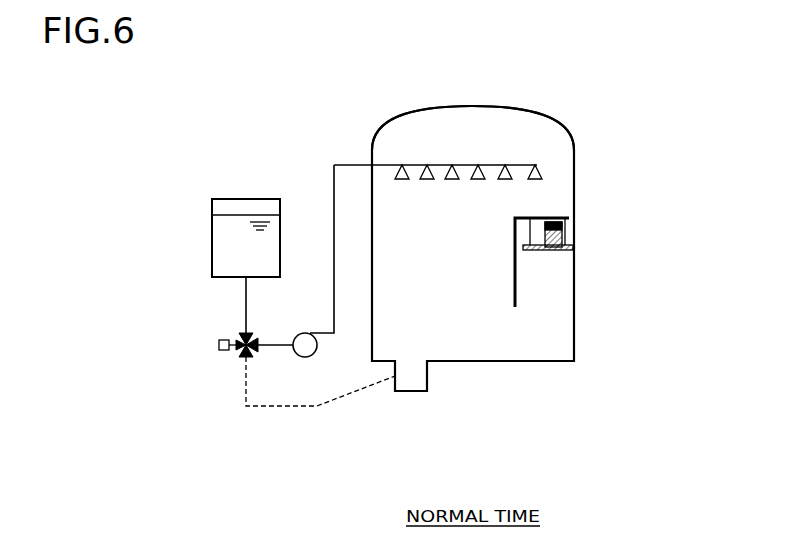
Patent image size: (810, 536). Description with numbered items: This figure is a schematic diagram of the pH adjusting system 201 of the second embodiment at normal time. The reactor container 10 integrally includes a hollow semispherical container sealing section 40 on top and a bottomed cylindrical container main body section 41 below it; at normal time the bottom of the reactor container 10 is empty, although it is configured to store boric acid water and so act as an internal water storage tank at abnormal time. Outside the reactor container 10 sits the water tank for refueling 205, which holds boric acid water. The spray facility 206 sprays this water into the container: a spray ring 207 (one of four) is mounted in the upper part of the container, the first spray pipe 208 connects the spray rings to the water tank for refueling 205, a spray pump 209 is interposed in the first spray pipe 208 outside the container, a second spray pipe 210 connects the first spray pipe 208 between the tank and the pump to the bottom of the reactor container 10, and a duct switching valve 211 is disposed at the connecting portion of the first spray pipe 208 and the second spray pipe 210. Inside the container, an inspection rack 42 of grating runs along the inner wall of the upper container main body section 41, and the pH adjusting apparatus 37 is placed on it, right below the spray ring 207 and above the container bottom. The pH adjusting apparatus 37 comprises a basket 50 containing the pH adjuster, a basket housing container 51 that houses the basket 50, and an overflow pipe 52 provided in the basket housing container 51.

The reactor container 10 is at (443, 107).
The container sealing section 40 is at (394, 125).
The container main body section 41 is at (371, 238).
The water tank for refueling 205 is at (245, 199).
The spray ring 207 is at (440, 165).
The first spray pipe 208 is at (246, 321).
The spray pump 209 is at (303, 356).
The second spray pipe 210 is at (350, 406).
The duct switching valve 211 is at (236, 362).
The spray facility 206 is at (302, 420).
The pH adjusting system 201 is at (556, 99).
The pH adjusting apparatus 37 is at (567, 204).
The inspection rack 42 is at (562, 252).
The basket 50 is at (552, 248).
The basket housing container 51 is at (563, 230).
The overflow pipe 52 is at (514, 280).